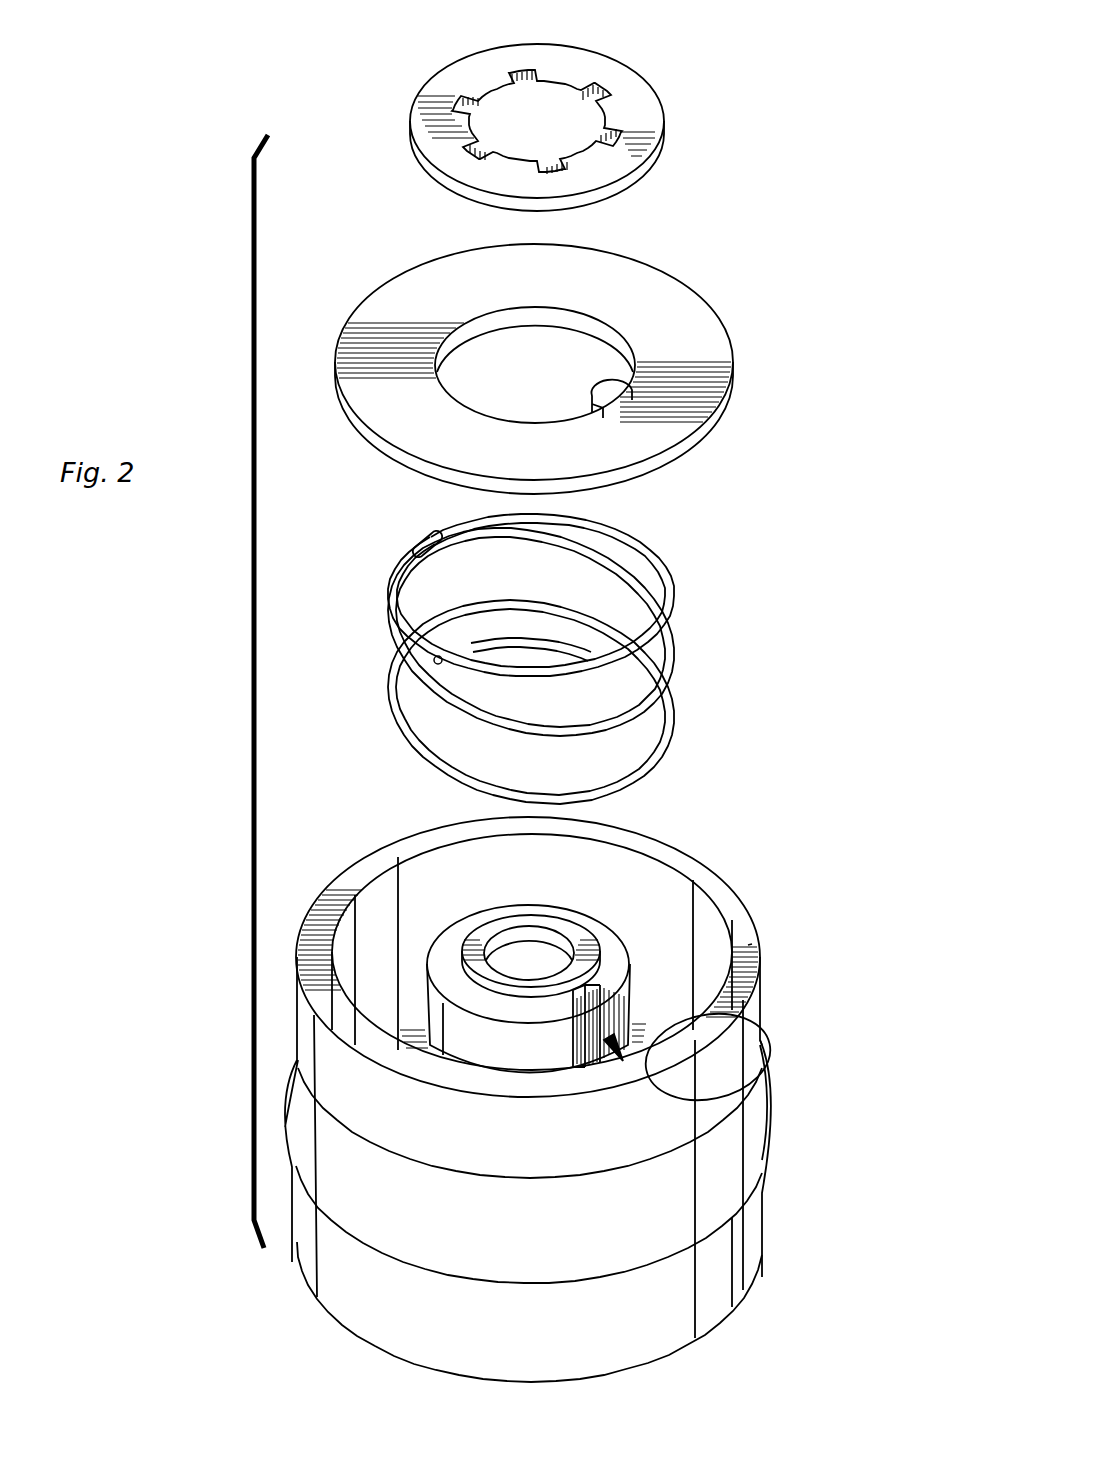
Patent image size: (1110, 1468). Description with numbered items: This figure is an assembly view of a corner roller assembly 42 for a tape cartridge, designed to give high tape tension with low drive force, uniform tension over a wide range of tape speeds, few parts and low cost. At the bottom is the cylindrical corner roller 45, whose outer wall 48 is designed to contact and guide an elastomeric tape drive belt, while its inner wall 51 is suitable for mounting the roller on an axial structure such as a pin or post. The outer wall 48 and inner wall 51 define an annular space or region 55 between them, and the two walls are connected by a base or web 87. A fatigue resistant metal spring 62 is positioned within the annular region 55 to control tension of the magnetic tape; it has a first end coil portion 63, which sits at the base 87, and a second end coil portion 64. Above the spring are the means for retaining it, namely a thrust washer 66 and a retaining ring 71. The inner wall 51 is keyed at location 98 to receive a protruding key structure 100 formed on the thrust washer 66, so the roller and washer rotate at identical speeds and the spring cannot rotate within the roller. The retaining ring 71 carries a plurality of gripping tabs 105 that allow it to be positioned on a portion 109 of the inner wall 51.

The corner roller assembly 42 is at (237, 268).
The retaining ring 71 is at (660, 115).
The gripping tabs 105 is at (558, 88).
The thrust washer 66 is at (718, 345).
The protruding key structure 100 is at (655, 400).
The second end coil portion 64 is at (663, 578).
The fatigue resistant metal spring 62 is at (668, 653).
The first end coil portion 63 is at (668, 727).
The cylindrical corner roller 45 is at (728, 887).
The annular space or region 55 is at (647, 903).
The outer wall 48 is at (748, 945).
The inner wall 51 is at (440, 950).
The portion of inner wall 109 is at (605, 955).
The base or web 87 is at (748, 1010).
The keyed location 98 is at (772, 1072).